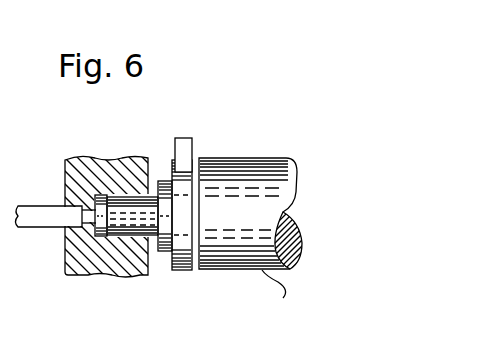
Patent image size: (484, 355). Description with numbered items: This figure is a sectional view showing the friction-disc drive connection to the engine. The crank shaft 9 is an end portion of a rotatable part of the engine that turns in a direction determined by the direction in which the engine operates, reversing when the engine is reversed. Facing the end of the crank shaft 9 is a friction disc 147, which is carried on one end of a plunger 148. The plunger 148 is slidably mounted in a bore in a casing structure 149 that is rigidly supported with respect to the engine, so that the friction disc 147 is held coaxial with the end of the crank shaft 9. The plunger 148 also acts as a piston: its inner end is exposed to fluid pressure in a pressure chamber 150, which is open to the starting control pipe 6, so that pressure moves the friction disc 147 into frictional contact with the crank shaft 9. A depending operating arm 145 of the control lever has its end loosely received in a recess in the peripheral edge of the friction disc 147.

The starting control pipe 6 is at (28, 214).
The crank shaft 9 is at (268, 158).
The operating arm 145 is at (182, 150).
The friction disc 147 is at (186, 263).
The plunger 148 is at (120, 226).
The casing structure 149 is at (72, 263).
The pressure chamber 150 is at (100, 219).